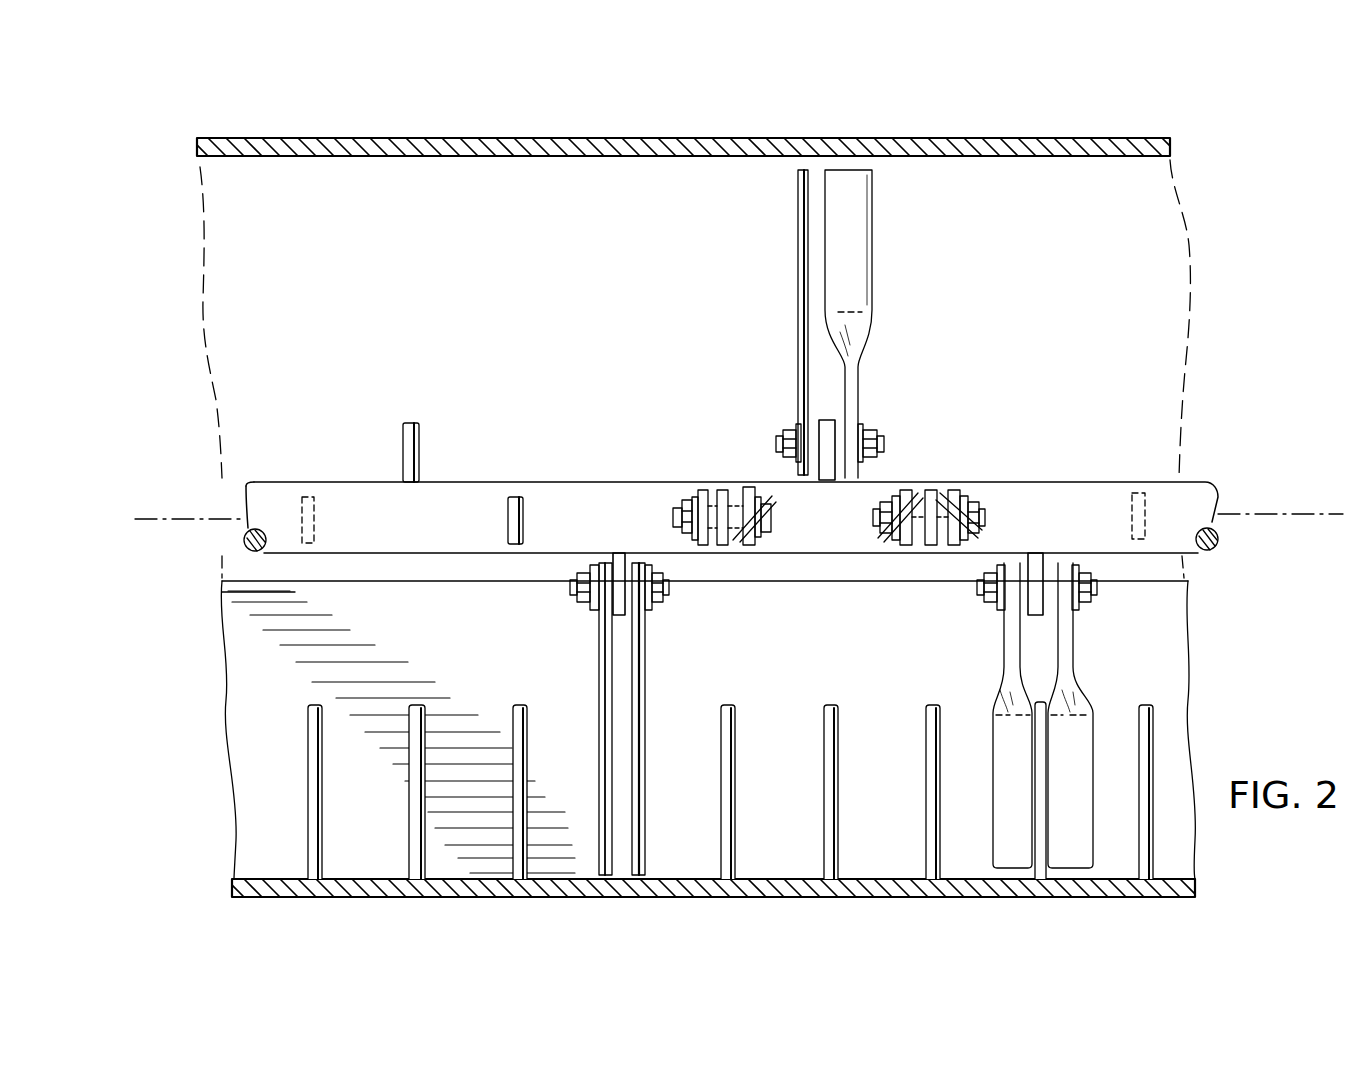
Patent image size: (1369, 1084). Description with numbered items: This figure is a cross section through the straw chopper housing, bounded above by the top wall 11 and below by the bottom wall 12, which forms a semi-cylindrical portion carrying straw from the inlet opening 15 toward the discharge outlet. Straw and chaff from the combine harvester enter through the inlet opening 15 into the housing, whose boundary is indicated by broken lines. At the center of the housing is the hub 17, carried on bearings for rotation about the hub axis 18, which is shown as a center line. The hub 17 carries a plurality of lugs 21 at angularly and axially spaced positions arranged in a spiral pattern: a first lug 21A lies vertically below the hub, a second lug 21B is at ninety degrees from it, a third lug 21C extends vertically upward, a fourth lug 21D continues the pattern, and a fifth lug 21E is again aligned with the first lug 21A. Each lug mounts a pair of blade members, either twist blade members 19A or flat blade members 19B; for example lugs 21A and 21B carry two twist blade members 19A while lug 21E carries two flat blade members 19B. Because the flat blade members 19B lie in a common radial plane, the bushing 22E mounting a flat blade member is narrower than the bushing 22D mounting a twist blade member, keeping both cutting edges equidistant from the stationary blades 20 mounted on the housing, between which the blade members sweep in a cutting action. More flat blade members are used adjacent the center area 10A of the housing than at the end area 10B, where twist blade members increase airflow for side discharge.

The top wall 11 is at (601, 138).
The bottom wall 12 is at (800, 898).
The center area of the housing 10A is at (597, 863).
The end area of the housing 10B is at (1093, 896).
The inlet opening 15 is at (1161, 249).
The hub 17 is at (607, 495).
The hub axis 18 is at (1240, 514).
The twist blade member 19A is at (875, 257).
The flat blade member 19B is at (800, 252).
The stationary blade 20 is at (738, 714).
The lug 21 is at (405, 422).
The first lug 21A is at (1037, 553).
The second lug 21B is at (932, 496).
The third lug 21C is at (826, 421).
The fourth lug 21D is at (722, 496).
The fifth lug 21E is at (619, 553).
The bushing 22D is at (840, 432).
The bushing 22E is at (796, 432).